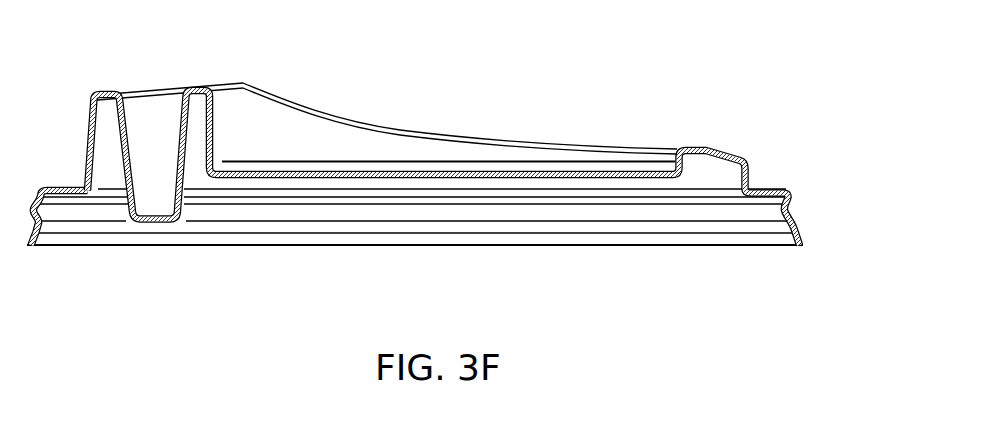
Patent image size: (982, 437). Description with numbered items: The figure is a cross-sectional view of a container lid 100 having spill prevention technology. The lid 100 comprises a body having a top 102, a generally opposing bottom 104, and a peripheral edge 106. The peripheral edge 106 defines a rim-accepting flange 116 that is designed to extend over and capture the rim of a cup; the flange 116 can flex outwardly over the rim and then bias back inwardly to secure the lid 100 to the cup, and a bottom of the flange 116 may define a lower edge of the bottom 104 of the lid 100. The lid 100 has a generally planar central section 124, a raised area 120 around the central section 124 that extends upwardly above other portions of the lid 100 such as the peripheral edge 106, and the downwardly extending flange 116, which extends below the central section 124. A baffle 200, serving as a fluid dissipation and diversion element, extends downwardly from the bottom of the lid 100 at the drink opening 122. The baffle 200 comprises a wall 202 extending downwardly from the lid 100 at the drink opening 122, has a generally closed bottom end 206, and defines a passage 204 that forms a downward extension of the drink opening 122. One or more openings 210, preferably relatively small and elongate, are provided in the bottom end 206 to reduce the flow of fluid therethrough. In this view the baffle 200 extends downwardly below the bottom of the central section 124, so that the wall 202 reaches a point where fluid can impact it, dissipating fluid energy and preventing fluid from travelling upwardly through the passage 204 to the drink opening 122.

The lid 100 is at (786, 40).
The top 102 is at (565, 131).
The bottom 104 is at (620, 260).
The peripheral edge 106 is at (808, 238).
The rim-accepting flange 116 is at (793, 192).
The raised area 120 is at (235, 85).
The drink opening 122 is at (155, 85).
The central section 124 is at (323, 170).
The baffle 200 is at (106, 178).
The wall 202 is at (188, 174).
The passage 204 is at (143, 133).
The bottom end 206 is at (178, 221).
The openings 210 is at (134, 218).